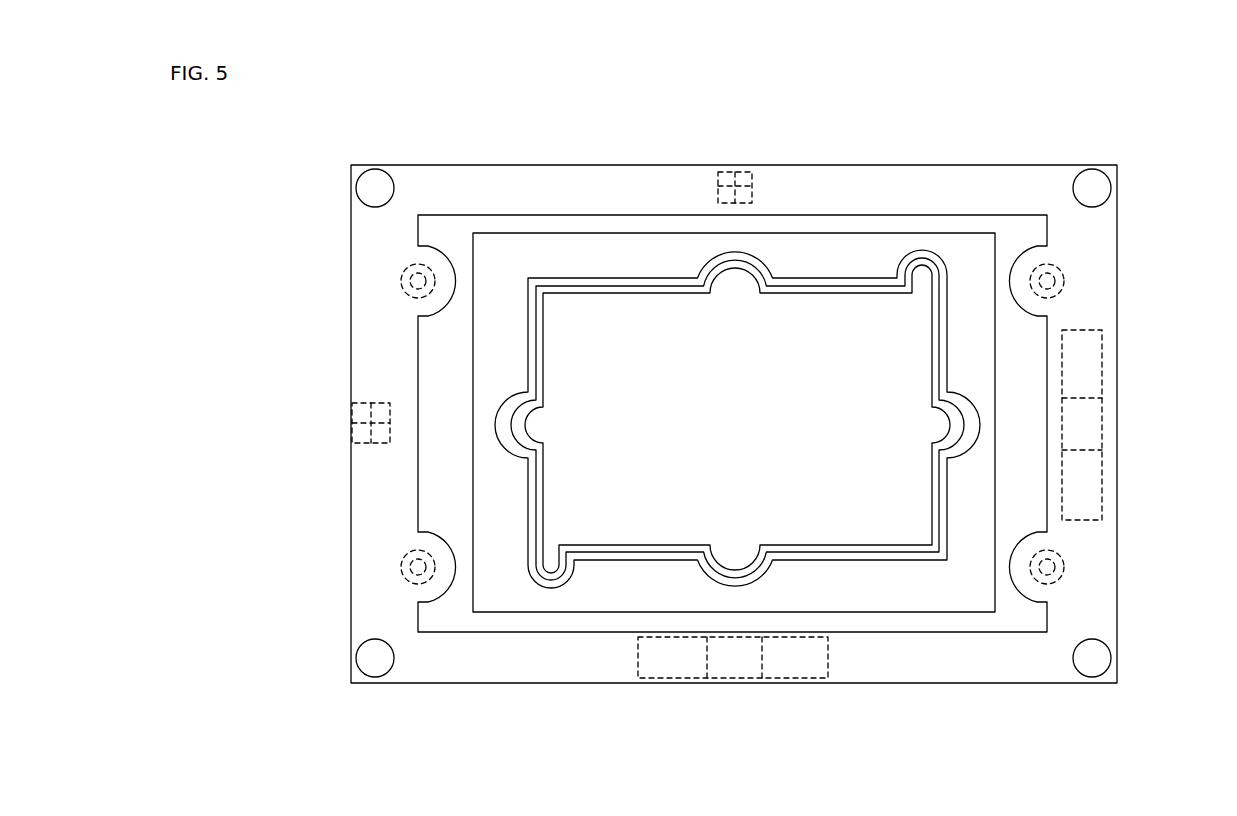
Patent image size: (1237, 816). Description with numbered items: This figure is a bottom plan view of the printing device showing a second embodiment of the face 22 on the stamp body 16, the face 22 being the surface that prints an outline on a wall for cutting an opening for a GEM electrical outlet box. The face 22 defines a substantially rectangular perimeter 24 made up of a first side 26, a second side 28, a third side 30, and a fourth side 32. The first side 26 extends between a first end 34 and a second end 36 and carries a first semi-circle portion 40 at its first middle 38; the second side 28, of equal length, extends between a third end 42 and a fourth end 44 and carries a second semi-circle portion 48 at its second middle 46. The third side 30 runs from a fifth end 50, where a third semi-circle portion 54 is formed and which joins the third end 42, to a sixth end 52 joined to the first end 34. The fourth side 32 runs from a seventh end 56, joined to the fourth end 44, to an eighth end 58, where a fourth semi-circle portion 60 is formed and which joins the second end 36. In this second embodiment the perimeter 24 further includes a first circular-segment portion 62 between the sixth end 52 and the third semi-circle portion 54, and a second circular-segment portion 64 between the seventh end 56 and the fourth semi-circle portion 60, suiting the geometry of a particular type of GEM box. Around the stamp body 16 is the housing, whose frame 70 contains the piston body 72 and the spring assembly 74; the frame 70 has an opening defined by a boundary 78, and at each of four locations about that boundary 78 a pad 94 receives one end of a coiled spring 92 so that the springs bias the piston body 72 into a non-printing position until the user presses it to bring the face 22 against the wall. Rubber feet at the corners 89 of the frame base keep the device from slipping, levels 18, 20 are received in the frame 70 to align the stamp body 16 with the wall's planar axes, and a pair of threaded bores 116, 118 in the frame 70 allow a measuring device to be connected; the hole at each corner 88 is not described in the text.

The stamp body 16 is at (638, 592).
The level 18 is at (1104, 420).
The level 20 is at (727, 672).
The face 22 is at (660, 285).
The perimeter 24 is at (610, 283).
The first side 26 is at (940, 357).
The second side 28 is at (535, 340).
The third side 30 is at (897, 555).
The fourth side 32 is at (830, 285).
The first end 34 is at (950, 563).
The second end 36 is at (948, 290).
The first middle 38 is at (960, 445).
The first semi-circle portion 40 is at (950, 462).
The third end 42 is at (530, 540).
The fourth end 44 is at (533, 297).
The second middle 46 is at (498, 432).
The second semi-circle portion 48 is at (518, 430).
The fifth end 50 is at (530, 573).
The sixth end 52 is at (940, 555).
The third semi-circle portion 54 is at (562, 572).
The seventh end 56 is at (527, 278).
The eighth end 58 is at (945, 260).
The fourth semi-circle portion 60 is at (913, 262).
The first circular-segment portion 62 is at (738, 582).
The second circular-segment portion 64 is at (720, 260).
The frame 70 is at (1012, 165).
The piston body 72 is at (573, 222).
The spring assembly 74 is at (407, 293).
The boundary 78 is at (777, 222).
The corner hole 88 is at (373, 186).
The corners 89 is at (351, 165).
The coiled spring 92 is at (403, 278).
The pad 94 is at (428, 246).
The threaded bore 116 is at (735, 172).
The threaded bore 118 is at (352, 425).